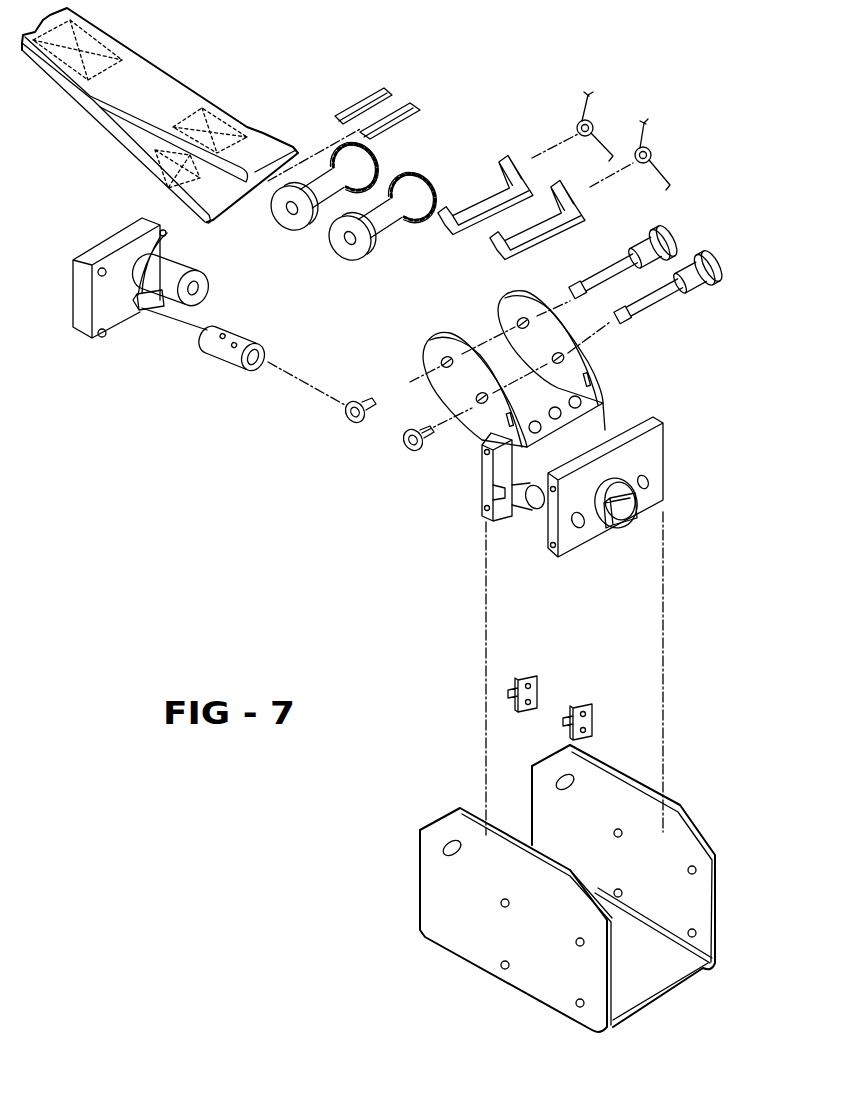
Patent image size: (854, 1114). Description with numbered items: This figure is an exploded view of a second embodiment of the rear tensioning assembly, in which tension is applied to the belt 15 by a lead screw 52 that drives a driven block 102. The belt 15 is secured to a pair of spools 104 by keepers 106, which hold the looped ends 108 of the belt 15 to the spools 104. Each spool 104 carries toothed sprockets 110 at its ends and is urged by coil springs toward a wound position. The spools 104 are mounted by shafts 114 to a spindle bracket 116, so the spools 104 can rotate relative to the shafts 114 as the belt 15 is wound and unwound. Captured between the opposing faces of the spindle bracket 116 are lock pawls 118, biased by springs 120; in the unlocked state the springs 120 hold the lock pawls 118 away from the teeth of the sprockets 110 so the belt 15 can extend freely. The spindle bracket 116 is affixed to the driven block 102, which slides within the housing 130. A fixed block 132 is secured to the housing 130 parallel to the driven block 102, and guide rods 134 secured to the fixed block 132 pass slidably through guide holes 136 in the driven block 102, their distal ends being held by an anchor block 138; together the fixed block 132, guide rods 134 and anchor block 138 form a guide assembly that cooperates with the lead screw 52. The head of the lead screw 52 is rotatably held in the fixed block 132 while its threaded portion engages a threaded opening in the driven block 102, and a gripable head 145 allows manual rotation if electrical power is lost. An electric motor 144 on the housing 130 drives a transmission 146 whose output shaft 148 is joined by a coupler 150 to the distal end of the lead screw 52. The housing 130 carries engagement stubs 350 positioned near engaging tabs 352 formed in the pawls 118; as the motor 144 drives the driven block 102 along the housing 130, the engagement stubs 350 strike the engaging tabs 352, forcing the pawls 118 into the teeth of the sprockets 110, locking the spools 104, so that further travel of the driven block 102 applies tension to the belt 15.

The belt 15 is at (152, 80).
The lead screw 52 is at (653, 488).
The driven block 102 is at (485, 472).
The spools 104 is at (375, 235).
The keepers 106 is at (410, 104).
The looped ends 108 is at (285, 148).
The toothed sprockets 110 is at (428, 228).
The shafts 114 is at (677, 243).
The spindle bracket 116 is at (602, 392).
The lock pawls 118 is at (497, 187).
The springs 120 is at (652, 158).
The housing 130 is at (677, 793).
The fixed block 132 is at (653, 440).
The guide rods 134 is at (528, 500).
The guide holes 136 is at (505, 490).
The anchor block 138 is at (480, 518).
The electric motor 144 is at (180, 267).
The gripable head 145 is at (627, 517).
The transmission 146 is at (93, 347).
The output shaft 148 is at (145, 310).
The coupler 150 is at (215, 360).
The engagement stubs 350 is at (537, 685).
The engaging tabs 352 is at (530, 157).